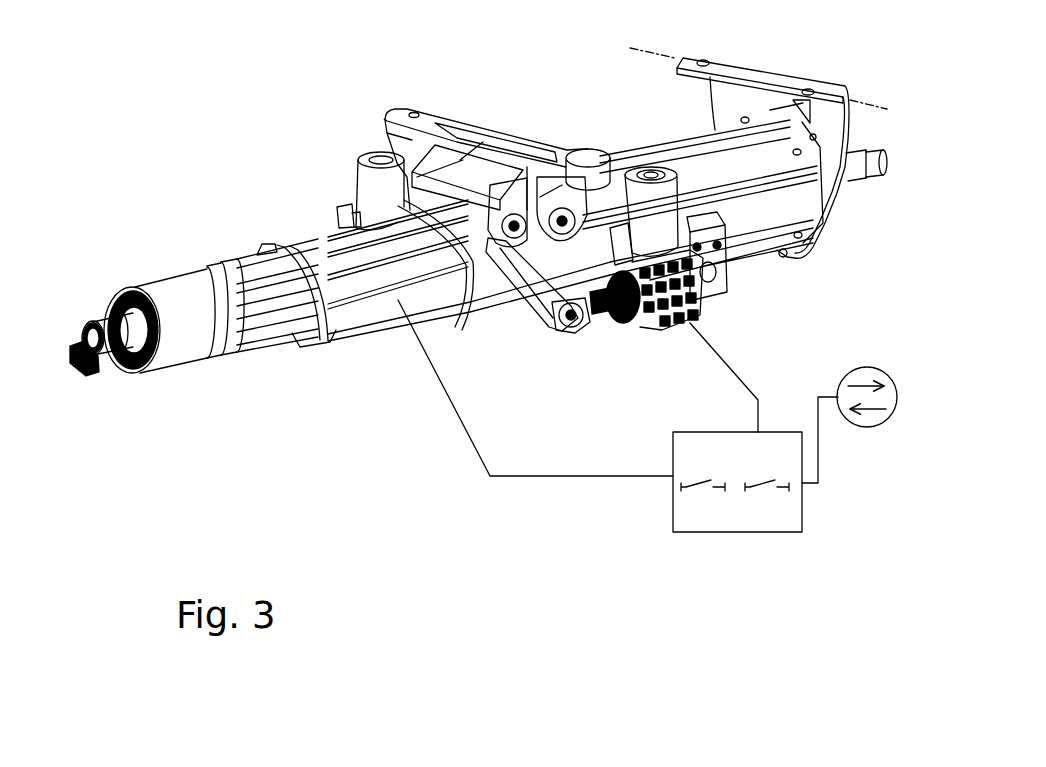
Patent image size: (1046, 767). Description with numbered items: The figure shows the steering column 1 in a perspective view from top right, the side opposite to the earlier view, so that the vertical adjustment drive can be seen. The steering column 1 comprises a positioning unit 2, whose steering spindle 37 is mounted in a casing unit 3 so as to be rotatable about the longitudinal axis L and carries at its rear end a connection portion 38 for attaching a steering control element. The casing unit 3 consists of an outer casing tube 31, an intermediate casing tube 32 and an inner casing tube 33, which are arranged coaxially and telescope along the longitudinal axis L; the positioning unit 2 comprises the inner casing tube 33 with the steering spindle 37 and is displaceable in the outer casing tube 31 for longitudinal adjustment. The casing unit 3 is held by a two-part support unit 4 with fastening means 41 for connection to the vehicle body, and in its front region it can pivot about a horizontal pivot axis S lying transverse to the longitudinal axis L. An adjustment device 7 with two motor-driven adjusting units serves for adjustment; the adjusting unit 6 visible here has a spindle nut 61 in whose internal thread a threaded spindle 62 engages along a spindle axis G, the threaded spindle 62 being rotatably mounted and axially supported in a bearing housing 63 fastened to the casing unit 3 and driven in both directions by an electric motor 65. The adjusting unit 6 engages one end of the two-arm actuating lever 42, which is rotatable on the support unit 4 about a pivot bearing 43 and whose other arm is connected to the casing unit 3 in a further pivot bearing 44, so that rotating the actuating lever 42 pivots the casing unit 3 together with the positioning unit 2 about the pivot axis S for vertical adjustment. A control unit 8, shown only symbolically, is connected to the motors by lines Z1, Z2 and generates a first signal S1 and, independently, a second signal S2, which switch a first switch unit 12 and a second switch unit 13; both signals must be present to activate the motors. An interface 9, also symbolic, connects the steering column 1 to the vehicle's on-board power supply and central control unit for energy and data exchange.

The steering column 1 is at (255, 153).
The positioning unit 2 is at (237, 362).
The casing unit 3 is at (756, 226).
The support unit 4 is at (764, 85).
The adjusting unit 6 is at (653, 335).
The adjustment device 7 is at (378, 128).
The control unit 8 is at (805, 515).
The interface 9 is at (868, 370).
The first switch unit 12 is at (698, 474).
The second switch unit 13 is at (755, 474).
The outer casing tube 31 is at (707, 163).
The intermediate casing tube 32 is at (409, 291).
The inner casing tube 33 is at (271, 319).
The steering spindle 37 is at (133, 305).
The connection portion 38 is at (102, 313).
The fastening means 41 is at (703, 58).
The actuating lever 42 is at (506, 290).
The pivot bearing 43 is at (563, 210).
The further pivot bearing 44 is at (516, 213).
The connector housing 61 is at (632, 323).
The threaded spindle 62 is at (617, 307).
The bearing housing 63 is at (672, 318).
The electric motor 65 is at (702, 270).
The spindle axis G is at (510, 335).
The pivot axis S is at (887, 110).
The longitudinal axis L is at (887, 157).
The line Z1 is at (538, 478).
The line Z2 is at (718, 375).
The first signal S1 is at (699, 492).
The second signal S2 is at (764, 492).